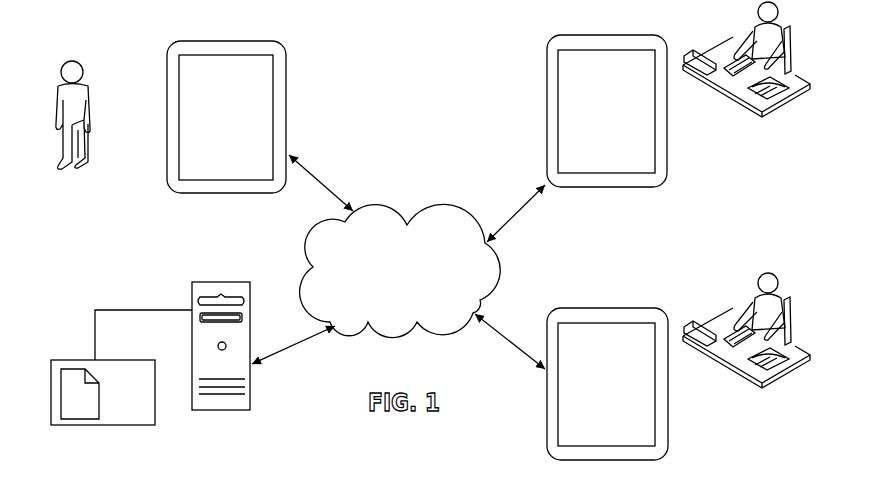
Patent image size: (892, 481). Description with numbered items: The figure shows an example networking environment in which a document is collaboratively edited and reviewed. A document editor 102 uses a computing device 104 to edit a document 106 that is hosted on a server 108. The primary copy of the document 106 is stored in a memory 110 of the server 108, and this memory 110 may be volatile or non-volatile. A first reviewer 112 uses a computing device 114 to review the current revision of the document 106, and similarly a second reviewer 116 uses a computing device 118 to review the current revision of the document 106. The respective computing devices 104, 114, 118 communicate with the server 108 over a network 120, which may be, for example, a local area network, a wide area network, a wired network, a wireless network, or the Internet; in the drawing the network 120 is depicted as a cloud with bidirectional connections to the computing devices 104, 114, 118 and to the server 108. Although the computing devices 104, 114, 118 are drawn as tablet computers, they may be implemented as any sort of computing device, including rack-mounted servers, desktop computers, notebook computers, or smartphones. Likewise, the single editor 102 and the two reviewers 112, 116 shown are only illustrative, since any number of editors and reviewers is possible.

The document editor 102 is at (72, 60).
The computing device 104 is at (226, 41).
The document 106 is at (80, 420).
The server 108 is at (222, 283).
The memory 110 is at (68, 360).
The first reviewer 112 is at (785, 102).
The computing device 114 is at (547, 112).
The second reviewer 116 is at (785, 375).
The computing device 118 is at (606, 308).
The network 120 is at (440, 210).